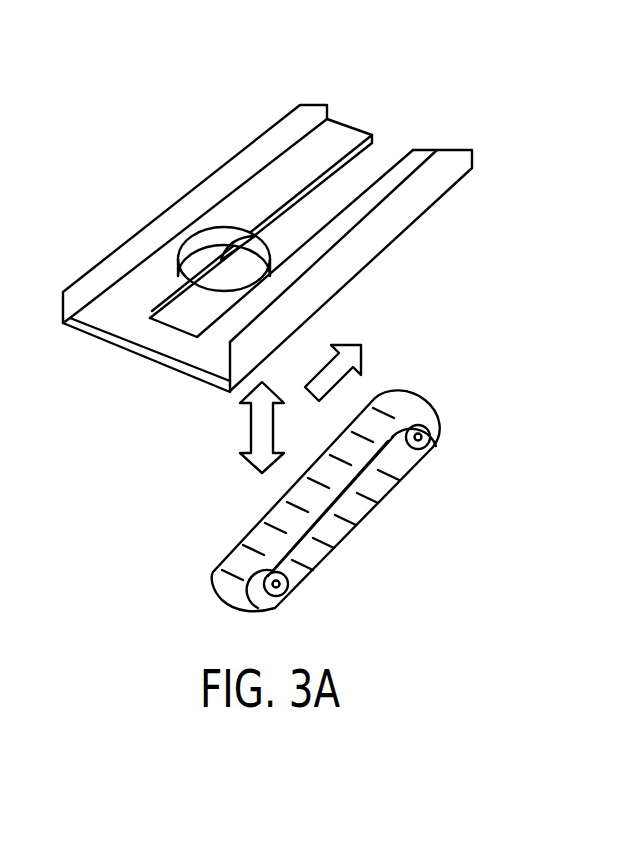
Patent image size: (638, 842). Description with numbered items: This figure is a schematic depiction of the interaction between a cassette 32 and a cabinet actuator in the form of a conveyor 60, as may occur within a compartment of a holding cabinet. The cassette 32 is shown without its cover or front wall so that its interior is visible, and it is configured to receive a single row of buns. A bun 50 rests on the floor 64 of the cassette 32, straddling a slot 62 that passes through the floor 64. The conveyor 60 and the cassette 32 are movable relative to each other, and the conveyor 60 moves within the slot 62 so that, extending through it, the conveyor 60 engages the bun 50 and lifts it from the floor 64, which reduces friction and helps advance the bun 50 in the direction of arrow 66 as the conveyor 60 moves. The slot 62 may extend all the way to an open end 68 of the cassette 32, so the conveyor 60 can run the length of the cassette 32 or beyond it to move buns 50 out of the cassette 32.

The cassette 32 is at (441, 178).
The bun 50 is at (210, 252).
The conveyor 60 is at (416, 471).
The slot 62 is at (312, 200).
The floor 64 is at (293, 187).
The arrow 66 is at (343, 364).
The open end 68 is at (297, 338).